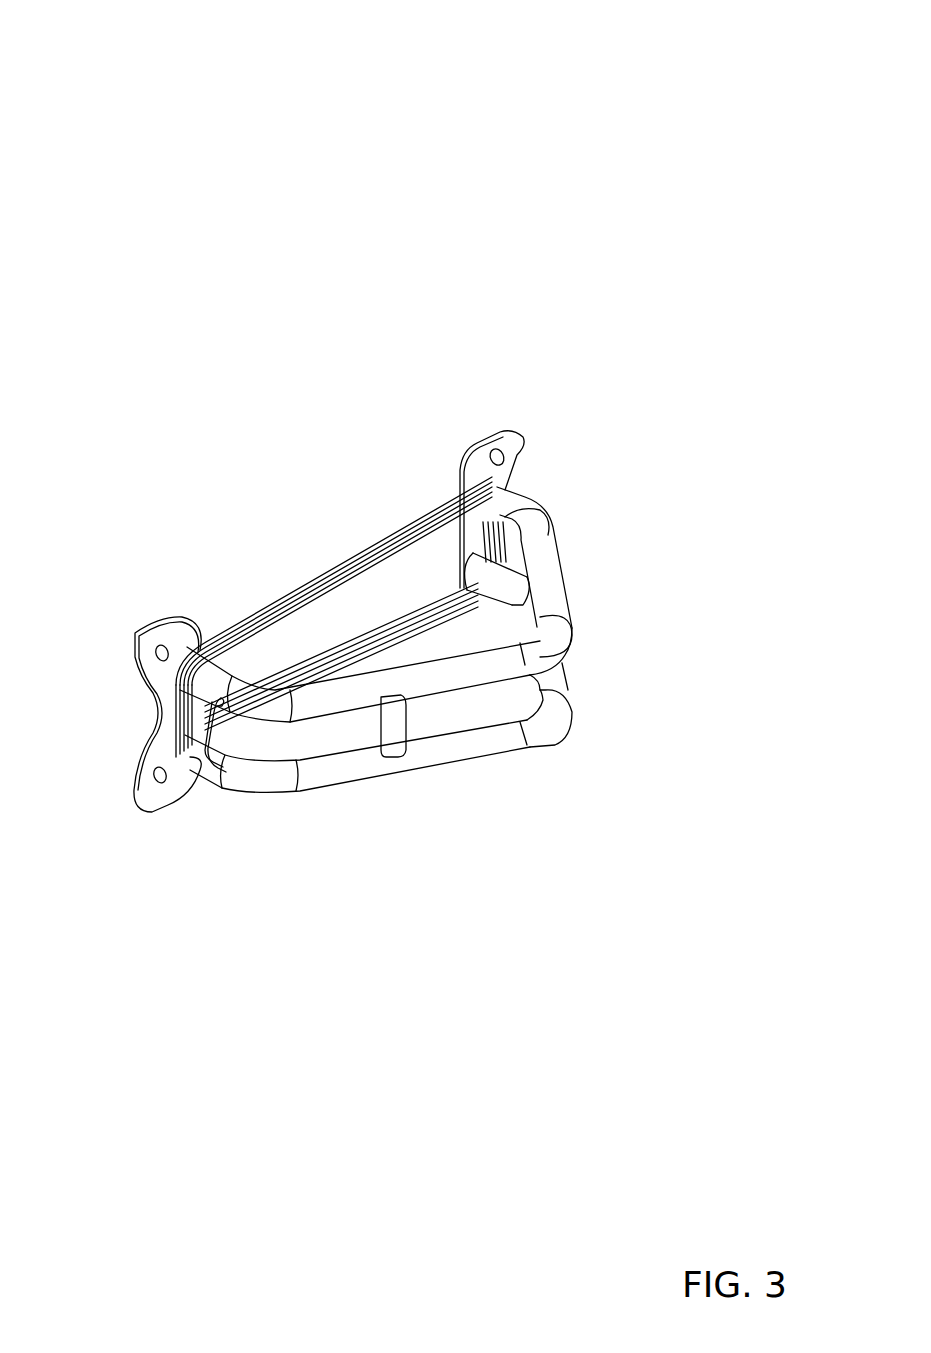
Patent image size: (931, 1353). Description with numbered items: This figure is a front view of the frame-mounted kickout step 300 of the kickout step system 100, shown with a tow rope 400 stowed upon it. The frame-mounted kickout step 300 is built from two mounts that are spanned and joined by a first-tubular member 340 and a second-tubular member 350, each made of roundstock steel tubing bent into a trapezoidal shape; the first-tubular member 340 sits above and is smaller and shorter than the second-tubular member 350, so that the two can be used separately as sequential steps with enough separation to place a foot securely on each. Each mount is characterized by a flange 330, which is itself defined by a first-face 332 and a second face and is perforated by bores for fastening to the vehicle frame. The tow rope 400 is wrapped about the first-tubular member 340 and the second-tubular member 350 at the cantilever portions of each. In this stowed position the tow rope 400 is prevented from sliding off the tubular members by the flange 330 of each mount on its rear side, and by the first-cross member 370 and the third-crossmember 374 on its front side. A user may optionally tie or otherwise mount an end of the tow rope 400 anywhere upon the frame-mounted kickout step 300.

The kickout step system 100 is at (622, 72).
The frame-mounted kickout step 300 is at (534, 383).
The flange 330 is at (156, 704).
The first-face 332 is at (172, 714).
The first-tubular member 340 is at (457, 688).
The second-tubular member 350 is at (358, 782).
The first-cross member 370 is at (207, 775).
The third-crossmember 374 is at (520, 575).
The tow rope 400 is at (318, 575).